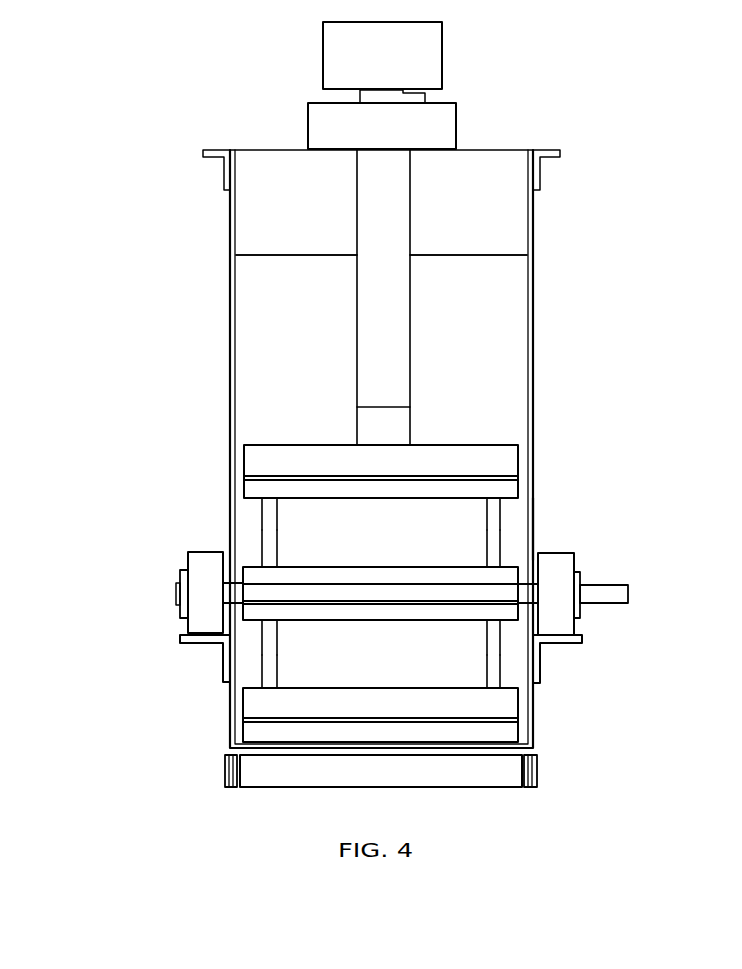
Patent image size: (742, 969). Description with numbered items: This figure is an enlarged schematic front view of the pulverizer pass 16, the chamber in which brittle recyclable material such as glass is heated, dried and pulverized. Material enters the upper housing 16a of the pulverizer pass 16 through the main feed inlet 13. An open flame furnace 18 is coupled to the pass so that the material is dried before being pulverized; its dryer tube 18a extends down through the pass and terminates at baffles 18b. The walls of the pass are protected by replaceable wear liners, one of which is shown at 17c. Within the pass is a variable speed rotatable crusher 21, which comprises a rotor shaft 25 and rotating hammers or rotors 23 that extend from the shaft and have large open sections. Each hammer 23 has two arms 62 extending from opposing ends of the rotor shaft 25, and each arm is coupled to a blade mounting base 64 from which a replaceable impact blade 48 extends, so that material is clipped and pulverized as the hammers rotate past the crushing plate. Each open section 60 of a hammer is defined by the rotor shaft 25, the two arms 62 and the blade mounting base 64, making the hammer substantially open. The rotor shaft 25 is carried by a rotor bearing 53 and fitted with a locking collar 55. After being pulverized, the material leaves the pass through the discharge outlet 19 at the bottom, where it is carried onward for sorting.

The main feed inlet 13 is at (457, 131).
The pulverizer pass 16 is at (545, 237).
The upper housing 16a is at (280, 223).
The wear liner 17c is at (475, 355).
The open flame furnace 18 is at (320, 59).
The dryer tube 18a is at (365, 333).
The baffles 18b is at (370, 430).
The discharge outlet 19 is at (438, 788).
The rotatable crusher 21 is at (543, 532).
The rotors 23 is at (253, 522).
The rotor shaft 25 is at (630, 595).
The replaceable impact blade 48 is at (506, 460).
The rotor bearing 53 is at (565, 626).
The locking collar 55 is at (581, 613).
The open section 60 is at (291, 551).
The arms 62 is at (260, 672).
The blade mounting base 64 is at (252, 488).